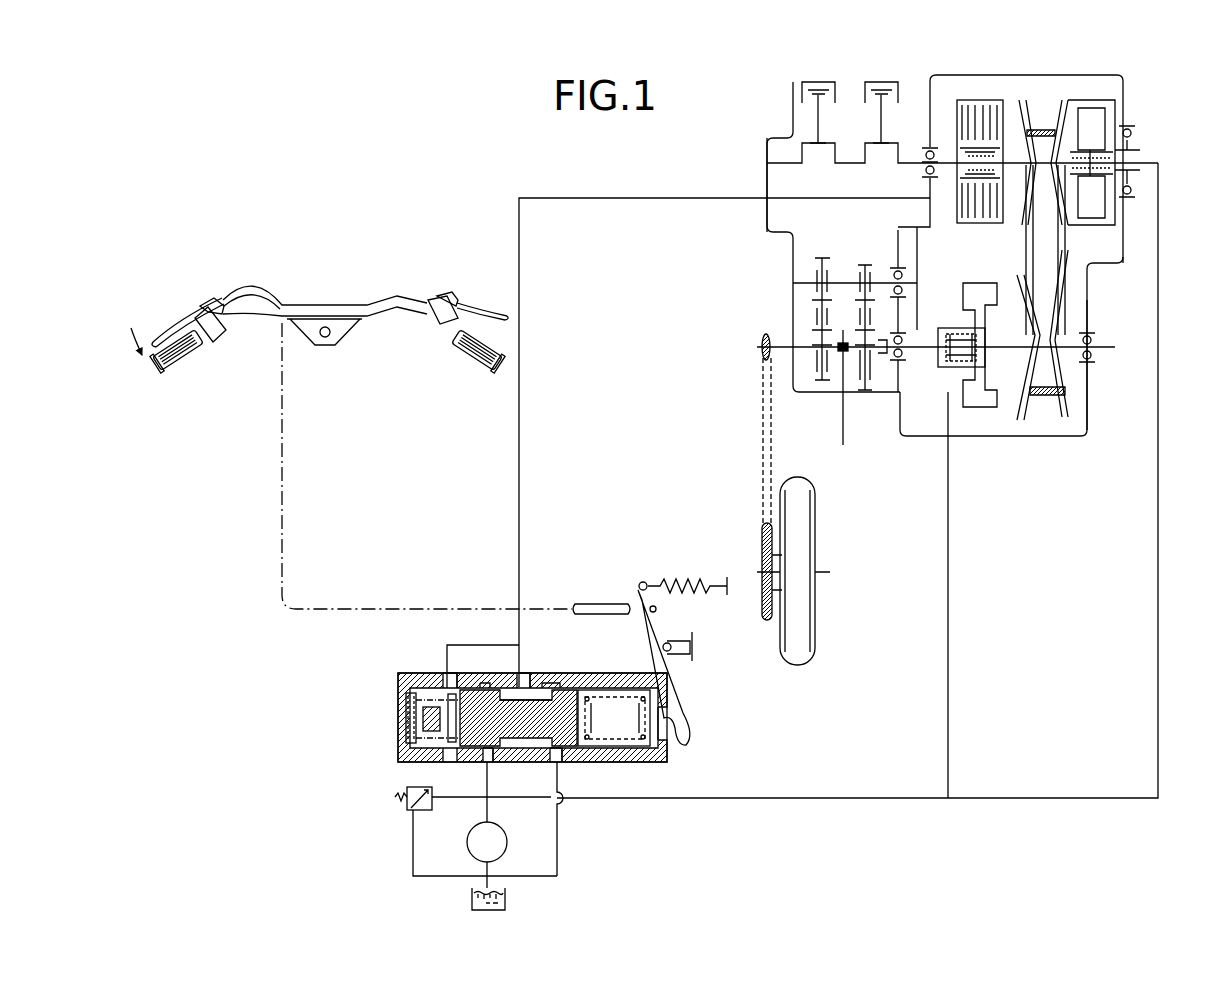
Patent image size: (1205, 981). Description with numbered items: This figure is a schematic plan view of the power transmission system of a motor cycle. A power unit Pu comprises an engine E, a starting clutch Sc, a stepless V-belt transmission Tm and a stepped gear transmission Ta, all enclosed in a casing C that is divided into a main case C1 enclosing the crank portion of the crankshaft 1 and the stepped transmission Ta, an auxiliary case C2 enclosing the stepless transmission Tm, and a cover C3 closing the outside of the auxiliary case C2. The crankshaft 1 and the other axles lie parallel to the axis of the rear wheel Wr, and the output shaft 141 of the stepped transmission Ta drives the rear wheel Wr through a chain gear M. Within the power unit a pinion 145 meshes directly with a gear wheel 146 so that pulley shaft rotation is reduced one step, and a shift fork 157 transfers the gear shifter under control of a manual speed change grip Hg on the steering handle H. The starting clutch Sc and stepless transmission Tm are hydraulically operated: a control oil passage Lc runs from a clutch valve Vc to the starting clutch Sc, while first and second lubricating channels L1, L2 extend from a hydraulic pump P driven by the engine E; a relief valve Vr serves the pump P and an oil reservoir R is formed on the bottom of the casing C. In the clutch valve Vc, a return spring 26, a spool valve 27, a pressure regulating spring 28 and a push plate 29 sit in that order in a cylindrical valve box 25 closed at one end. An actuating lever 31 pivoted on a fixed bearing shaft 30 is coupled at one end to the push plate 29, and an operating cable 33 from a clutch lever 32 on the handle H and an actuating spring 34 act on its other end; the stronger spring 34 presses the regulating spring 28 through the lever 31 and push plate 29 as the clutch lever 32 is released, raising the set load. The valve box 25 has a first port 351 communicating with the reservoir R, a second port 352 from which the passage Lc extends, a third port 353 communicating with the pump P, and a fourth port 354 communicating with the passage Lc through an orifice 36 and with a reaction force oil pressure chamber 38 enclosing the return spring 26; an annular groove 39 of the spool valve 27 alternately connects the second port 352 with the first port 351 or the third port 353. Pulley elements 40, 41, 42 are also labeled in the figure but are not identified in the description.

The crankshaft 1 is at (915, 158).
The cylindrical valve box 25 is at (617, 762).
The return spring 26 is at (410, 692).
The spool valve 27 is at (518, 718).
The pressure regulating spring 28 is at (600, 692).
The push plate 29 is at (667, 743).
The fixed bearing shaft 30 is at (662, 647).
The actuating lever 31 is at (695, 690).
The clutch lever 32 is at (172, 328).
The operating cable 33 is at (425, 609).
The actuating spring 34 is at (683, 580).
The orifice 36 is at (446, 668).
The reaction force oil pressure chamber 38 is at (458, 712).
The annular groove 39 is at (526, 707).
The movable sheave 40 is at (1021, 120).
The belt 41 is at (1066, 396).
The driven pulley 42 is at (1046, 395).
The output shaft 141 is at (780, 340).
The pinion 145 is at (918, 367).
The gear wheel 146 is at (915, 243).
The shift fork 157 is at (848, 420).
The first port 351 is at (558, 756).
The second port 352 is at (527, 684).
The third port 353 is at (490, 756).
The fourth port 354 is at (455, 684).
The engine E is at (836, 66).
The power unit Pu is at (936, 47).
The starting clutch Sc is at (978, 101).
The stepless V-belt transmission Tm is at (1073, 108).
The casing C is at (1126, 95).
The main case C1 is at (767, 236).
The auxiliary case C2 is at (1027, 437).
The cover C3 is at (1125, 263).
The stepped gear transmission Ta is at (842, 255).
The steering handle H is at (397, 296).
The manual speed change grip Hg is at (195, 357).
The control oil passage Lc is at (519, 465).
The first lubricating channel L1 is at (1158, 622).
The second lubricating channel L2 is at (948, 622).
The chain gear M is at (760, 458).
The rear wheel Wr is at (812, 637).
The clutch valve Vc is at (571, 668).
The relief valve Vr is at (419, 786).
The hydraulic pump P is at (507, 842).
The oil reservoir R is at (505, 900).